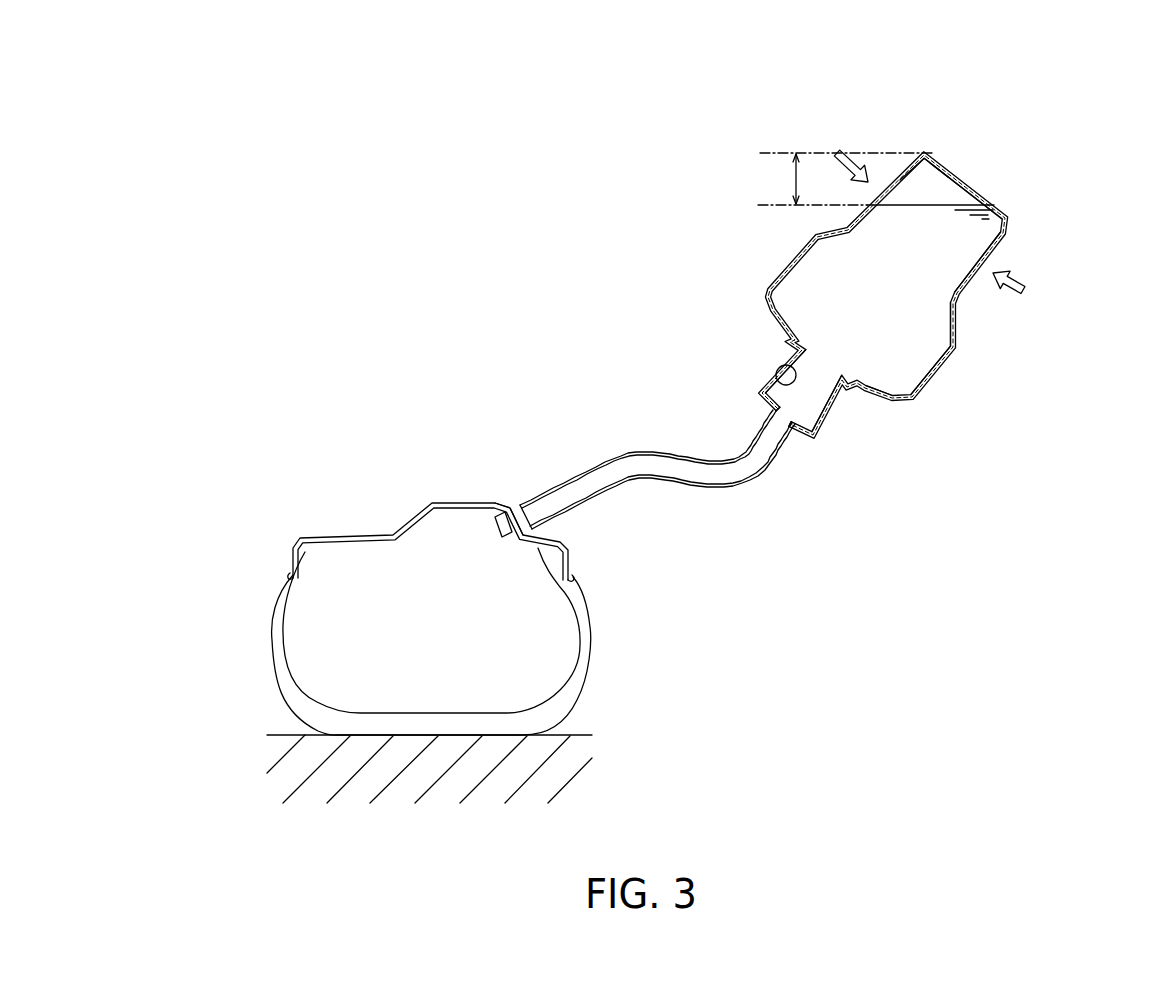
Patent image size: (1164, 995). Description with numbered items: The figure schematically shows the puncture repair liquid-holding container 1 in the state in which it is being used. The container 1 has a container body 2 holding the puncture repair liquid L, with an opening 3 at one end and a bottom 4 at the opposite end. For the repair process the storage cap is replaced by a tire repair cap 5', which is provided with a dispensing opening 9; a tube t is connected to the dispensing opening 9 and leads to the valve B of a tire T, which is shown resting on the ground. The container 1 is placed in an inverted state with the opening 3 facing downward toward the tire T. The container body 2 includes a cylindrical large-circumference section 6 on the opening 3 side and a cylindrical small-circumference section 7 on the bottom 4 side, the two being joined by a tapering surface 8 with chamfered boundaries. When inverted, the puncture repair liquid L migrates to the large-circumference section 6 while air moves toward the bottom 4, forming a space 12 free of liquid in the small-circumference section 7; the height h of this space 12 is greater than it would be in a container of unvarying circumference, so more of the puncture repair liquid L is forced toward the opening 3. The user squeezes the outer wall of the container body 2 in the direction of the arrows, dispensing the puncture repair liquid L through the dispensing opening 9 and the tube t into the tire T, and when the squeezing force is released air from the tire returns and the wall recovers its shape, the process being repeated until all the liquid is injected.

The puncture repair liquid-holding container 1 is at (907, 267).
The container body 2 is at (785, 258).
The opening 3 is at (777, 377).
The bottom 4 is at (967, 182).
The tire repair cap 5' is at (866, 419).
The large-circumference section 6 is at (940, 367).
The small-circumference section 7 is at (995, 253).
The tapering surface 8 is at (953, 320).
The dispensing opening 9 is at (773, 410).
The space 12 is at (915, 180).
The height of the space h is at (846, 179).
The puncture repair liquid L is at (973, 230).
The tube t is at (652, 452).
The valve B is at (513, 507).
The tire T is at (292, 533).